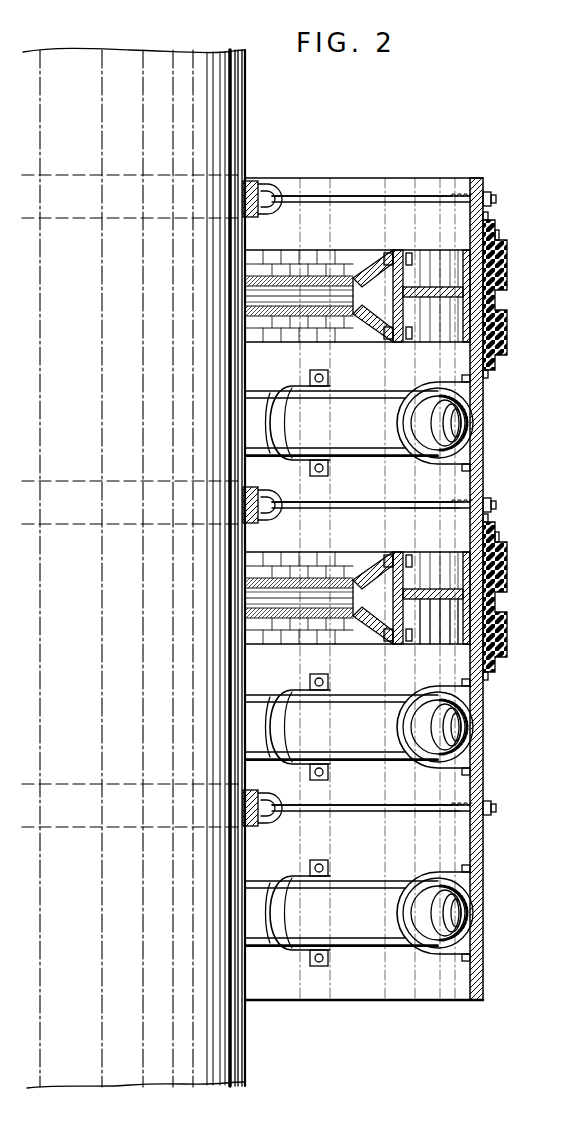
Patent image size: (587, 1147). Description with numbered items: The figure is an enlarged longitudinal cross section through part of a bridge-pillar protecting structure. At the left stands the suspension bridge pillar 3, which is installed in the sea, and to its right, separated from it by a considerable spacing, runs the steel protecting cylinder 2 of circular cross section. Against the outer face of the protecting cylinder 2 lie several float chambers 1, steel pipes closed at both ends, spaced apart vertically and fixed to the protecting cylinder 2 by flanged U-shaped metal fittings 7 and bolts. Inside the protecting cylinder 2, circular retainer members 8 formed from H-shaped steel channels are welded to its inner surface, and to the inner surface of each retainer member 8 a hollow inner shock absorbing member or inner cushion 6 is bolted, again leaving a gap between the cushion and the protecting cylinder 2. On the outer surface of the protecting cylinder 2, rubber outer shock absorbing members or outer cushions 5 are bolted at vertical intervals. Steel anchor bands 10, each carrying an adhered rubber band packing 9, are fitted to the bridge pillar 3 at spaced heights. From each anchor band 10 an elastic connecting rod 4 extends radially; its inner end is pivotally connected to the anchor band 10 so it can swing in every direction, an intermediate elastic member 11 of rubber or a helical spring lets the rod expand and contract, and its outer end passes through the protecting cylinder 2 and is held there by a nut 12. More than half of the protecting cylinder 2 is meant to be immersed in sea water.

The float chamber 1 is at (366, 400).
The protecting cylinder 2 is at (484, 417).
The suspension bridge pillar 3 is at (220, 108).
The elastic connecting rod 4 is at (398, 192).
The outer shock absorbing member 5 is at (506, 240).
The inner shock absorbing member 6 is at (383, 265).
The flanged U-shaped metal fitting 7 is at (280, 392).
The circular retainer member 8 is at (432, 608).
The rubber band packing 9 is at (250, 182).
The steel anchor band 10 is at (264, 178).
The intermediate elastic member 11 is at (398, 508).
The nut 12 is at (490, 192).